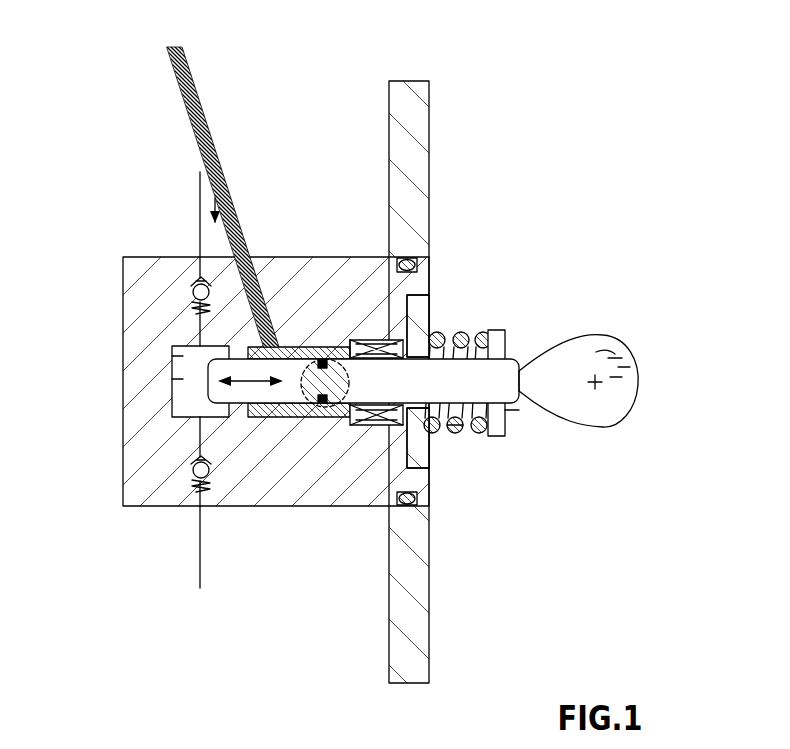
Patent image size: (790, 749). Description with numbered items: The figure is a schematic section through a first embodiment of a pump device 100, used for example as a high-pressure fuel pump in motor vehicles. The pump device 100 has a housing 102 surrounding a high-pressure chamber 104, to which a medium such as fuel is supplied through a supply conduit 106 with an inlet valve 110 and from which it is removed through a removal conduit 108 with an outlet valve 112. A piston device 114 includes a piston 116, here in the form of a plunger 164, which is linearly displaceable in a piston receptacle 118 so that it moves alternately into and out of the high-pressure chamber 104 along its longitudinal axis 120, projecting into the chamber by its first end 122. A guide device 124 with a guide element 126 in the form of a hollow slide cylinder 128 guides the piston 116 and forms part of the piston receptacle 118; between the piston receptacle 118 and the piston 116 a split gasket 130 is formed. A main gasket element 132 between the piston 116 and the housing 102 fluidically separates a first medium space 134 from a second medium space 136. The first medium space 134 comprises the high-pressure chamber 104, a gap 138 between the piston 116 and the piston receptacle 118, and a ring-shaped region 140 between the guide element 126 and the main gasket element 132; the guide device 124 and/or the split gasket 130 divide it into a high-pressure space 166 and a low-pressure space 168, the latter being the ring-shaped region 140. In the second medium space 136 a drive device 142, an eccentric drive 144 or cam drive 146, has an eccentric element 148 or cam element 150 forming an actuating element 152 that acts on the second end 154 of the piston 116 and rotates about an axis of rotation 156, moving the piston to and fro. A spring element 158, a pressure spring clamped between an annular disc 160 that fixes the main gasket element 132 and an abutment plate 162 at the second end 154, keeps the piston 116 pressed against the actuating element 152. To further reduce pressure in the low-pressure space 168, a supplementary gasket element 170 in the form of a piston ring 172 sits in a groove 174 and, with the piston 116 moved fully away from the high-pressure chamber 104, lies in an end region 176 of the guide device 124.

The pump device 100 is at (301, 126).
The housing 102 is at (147, 432).
The high-pressure chamber 104 is at (183, 367).
The supply conduit 106 is at (200, 213).
The removal conduit 108 is at (200, 533).
The inlet valve 110 is at (192, 290).
The outlet valve 112 is at (187, 460).
The piston device 114 is at (474, 305).
The piston 116 is at (500, 413).
The piston receptacle 118 is at (262, 428).
The longitudinal axis 120 is at (250, 345).
The first end 122 is at (183, 387).
The guide device 124 is at (314, 420).
The guide element 126 is at (302, 428).
The hollow slide cylinder 128 is at (282, 347).
The split gasket 130 is at (330, 347).
The main gasket element 132 is at (385, 422).
The first medium space 134 is at (183, 356).
The second medium space 136 is at (517, 441).
The gap 138 is at (240, 418).
The ring-shaped region 140 is at (396, 292).
The drive device 142 is at (582, 353).
The eccentric drive 144 is at (636, 430).
The cam drive 146 is at (612, 441).
The eccentric element 148 is at (620, 367).
The cam element 150 is at (610, 358).
The actuating element 152 is at (598, 352).
The second end 154 is at (521, 374).
The axis of rotation 156 is at (613, 377).
The spring element 158 is at (460, 336).
The annular disc 160 is at (418, 310).
The abutment plate 162 is at (514, 418).
The plunger 164 is at (442, 405).
The high-pressure space 166 is at (183, 379).
The low-pressure space 168 is at (360, 335).
The supplementary gasket element 170 is at (352, 340).
The piston ring 172 is at (338, 424).
The groove 174 is at (330, 365).
The end region 176 is at (345, 428).